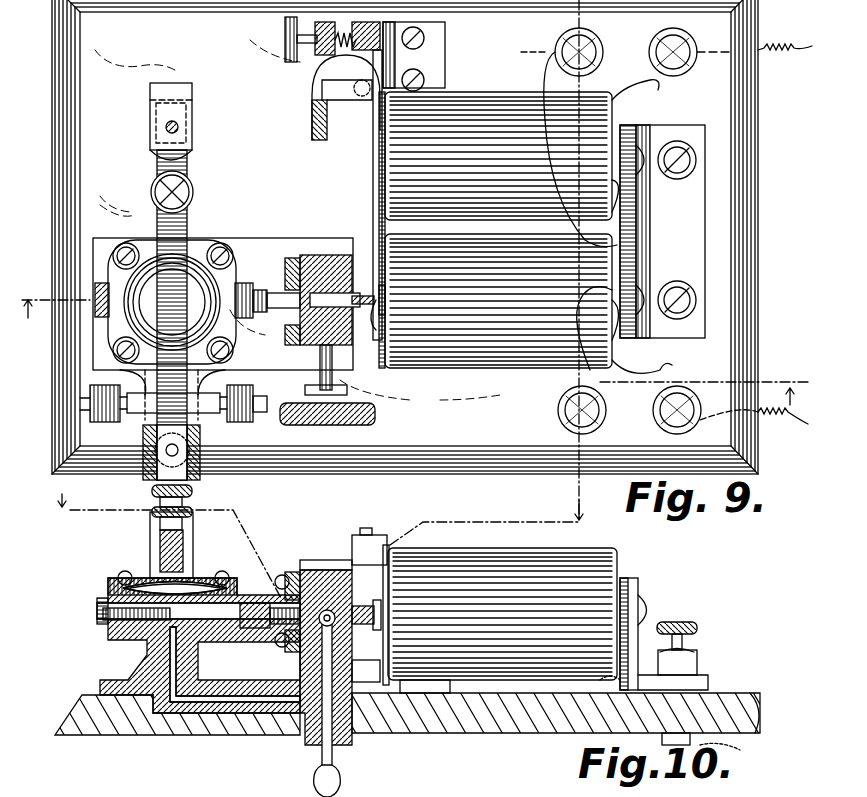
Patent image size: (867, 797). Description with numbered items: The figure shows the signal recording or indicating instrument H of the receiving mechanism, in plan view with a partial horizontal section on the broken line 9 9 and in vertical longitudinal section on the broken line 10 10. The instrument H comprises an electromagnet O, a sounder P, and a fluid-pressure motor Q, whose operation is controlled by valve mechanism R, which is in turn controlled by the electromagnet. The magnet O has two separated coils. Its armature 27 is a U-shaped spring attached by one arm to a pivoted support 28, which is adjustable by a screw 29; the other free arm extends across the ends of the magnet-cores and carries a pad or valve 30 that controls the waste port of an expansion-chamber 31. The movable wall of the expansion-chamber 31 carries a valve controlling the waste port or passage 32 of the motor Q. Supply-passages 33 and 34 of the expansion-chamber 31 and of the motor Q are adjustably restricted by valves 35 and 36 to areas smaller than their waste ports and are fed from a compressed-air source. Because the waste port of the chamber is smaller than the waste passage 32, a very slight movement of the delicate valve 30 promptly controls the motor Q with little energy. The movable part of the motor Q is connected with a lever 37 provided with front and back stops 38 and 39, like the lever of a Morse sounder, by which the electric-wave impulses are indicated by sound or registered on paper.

In FIG. 9, the signal recording or indicating instrument H is at (52, 220).
In FIG. 10, the signal recording or indicating instrument H is at (445, 733).
In FIG. 9, the electromagnet O is at (514, 92).
In FIG. 10, the electromagnet O is at (502, 607).
In FIG. 9, the sounder P is at (159, 281).
In FIG. 10, the sounder P is at (181, 537).
In FIG. 9, the fluid-pressure motor Q is at (225, 272).
In FIG. 10, the fluid-pressure motor Q is at (108, 584).
In FIG. 9, the valve mechanism R is at (310, 256).
In FIG. 10, the valve mechanism R is at (316, 570).
In FIG. 9, the section line 9 9 is at (584, 267).
In FIG. 10, the section line 9 9 is at (164, 546).
In FIG. 9, the section line 10 10 is at (410, 348).
In FIG. 9, the armature 27 is at (376, 205).
In FIG. 10, the armature 27 is at (366, 606).
In FIG. 9, the pivoted support 28 is at (356, 100).
In FIG. 10, the pivoted support 28 is at (348, 560).
In FIG. 9, the screw 29 is at (285, 44).
In FIG. 9, the pad or valve 30 is at (376, 334).
In FIG. 10, the pad or valve 30 is at (378, 606).
In FIG. 9, the expansion-chamber 31 is at (278, 310).
In FIG. 10, the expansion-chamber 31 is at (285, 638).
In FIG. 10, the waste port or passage 32 is at (272, 606).
In FIG. 10, the supply-passage 33 is at (300, 662).
In FIG. 10, the supply-passage 34 is at (178, 650).
In FIG. 9, the valve 35 is at (376, 414).
In FIG. 10, the valve 35 is at (360, 672).
In FIG. 10, the valve 36 is at (190, 595).
In FIG. 10, the lever 37 is at (160, 542).
In FIG. 9, the front stop 38 is at (152, 192).
In FIG. 10, the front stop 38 is at (152, 510).
In FIG. 9, the back stop 39 is at (166, 128).
In FIG. 10, the back stop 39 is at (193, 491).